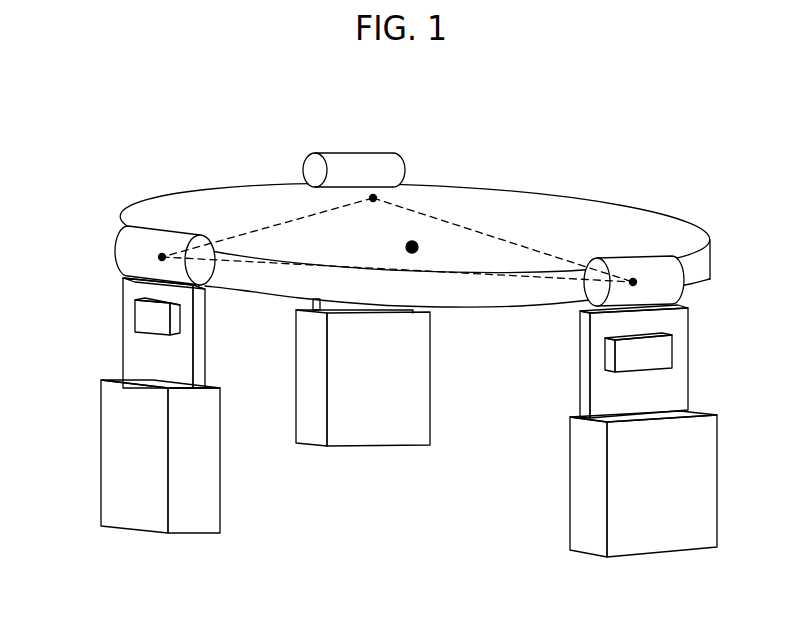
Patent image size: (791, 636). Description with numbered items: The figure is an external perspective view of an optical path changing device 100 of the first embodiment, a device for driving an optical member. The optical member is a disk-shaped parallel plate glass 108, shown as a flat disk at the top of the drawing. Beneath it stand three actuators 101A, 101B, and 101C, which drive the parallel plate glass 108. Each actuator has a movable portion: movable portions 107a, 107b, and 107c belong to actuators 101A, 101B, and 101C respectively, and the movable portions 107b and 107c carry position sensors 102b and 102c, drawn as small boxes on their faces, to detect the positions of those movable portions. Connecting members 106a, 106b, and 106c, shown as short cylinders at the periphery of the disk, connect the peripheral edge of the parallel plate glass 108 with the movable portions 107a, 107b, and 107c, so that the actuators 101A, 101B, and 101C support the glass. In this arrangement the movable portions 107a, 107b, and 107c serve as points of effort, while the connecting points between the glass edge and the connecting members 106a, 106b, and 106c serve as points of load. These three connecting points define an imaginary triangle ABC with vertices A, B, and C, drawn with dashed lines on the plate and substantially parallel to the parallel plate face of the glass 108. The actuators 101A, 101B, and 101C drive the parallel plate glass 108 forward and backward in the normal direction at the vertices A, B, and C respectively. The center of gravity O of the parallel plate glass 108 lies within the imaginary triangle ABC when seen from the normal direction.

The optical path changing device 100 is at (410, 614).
The actuator 101A is at (363, 417).
The actuator 101B is at (130, 483).
The actuator 101C is at (620, 502).
The position sensor 102b is at (155, 320).
The position sensor 102c is at (635, 356).
The connecting member 106a is at (362, 152).
The connecting member 106b is at (117, 260).
The connecting member 106c is at (680, 293).
The movable portion 107a is at (333, 305).
The movable portion 107b is at (147, 342).
The movable portion 107c is at (623, 385).
The parallel plate glass 108 is at (533, 192).
The vertex A is at (375, 198).
The vertex B is at (162, 257).
The vertex C is at (633, 280).
The center of gravity O is at (403, 237).